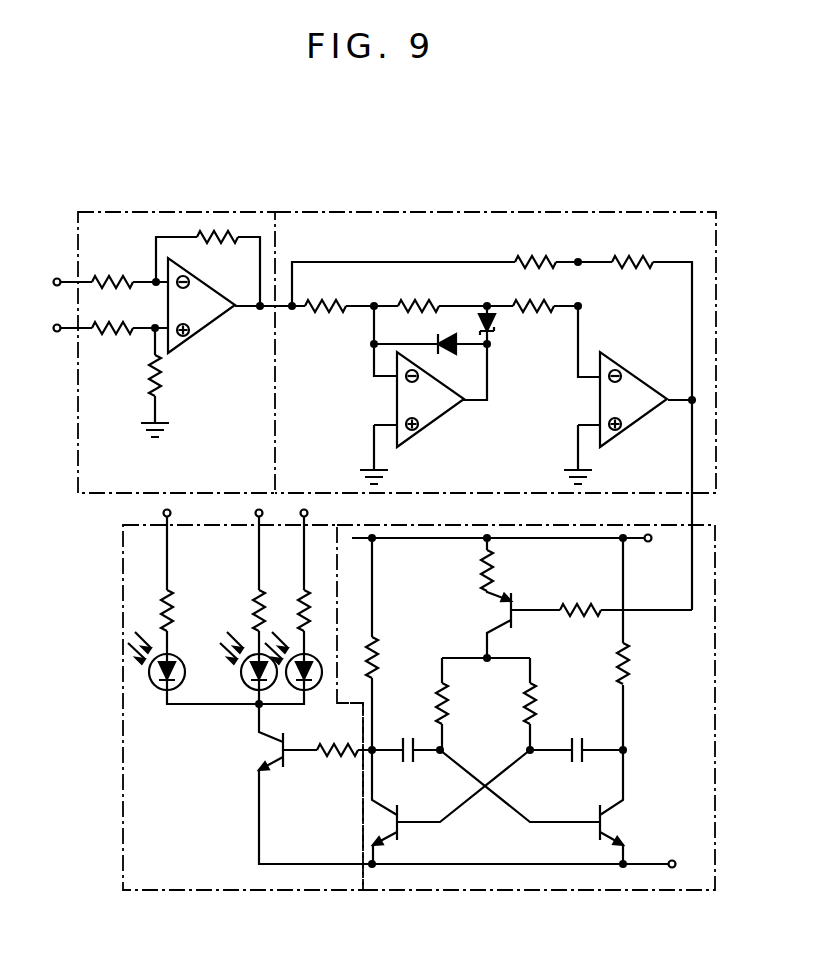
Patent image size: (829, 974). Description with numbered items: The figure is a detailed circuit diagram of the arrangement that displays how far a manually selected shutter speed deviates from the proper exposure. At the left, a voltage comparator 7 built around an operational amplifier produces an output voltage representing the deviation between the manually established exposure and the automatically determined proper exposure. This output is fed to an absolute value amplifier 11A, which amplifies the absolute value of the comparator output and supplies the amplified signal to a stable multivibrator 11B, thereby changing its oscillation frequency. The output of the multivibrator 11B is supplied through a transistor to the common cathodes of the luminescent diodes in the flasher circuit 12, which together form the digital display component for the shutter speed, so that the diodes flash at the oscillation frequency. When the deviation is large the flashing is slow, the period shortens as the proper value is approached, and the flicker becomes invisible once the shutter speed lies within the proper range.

The voltage comparator 7 is at (122, 211).
The absolute value amplifier 11A is at (560, 212).
The stable multivibrator 11B is at (555, 890).
The flasher circuit 12 is at (227, 890).